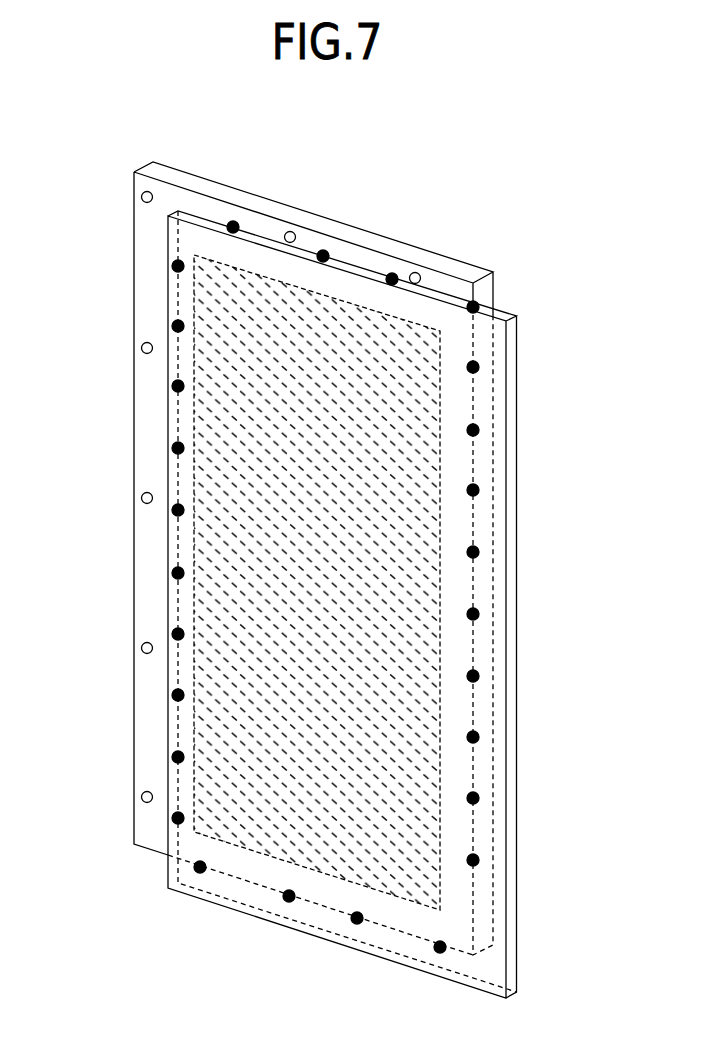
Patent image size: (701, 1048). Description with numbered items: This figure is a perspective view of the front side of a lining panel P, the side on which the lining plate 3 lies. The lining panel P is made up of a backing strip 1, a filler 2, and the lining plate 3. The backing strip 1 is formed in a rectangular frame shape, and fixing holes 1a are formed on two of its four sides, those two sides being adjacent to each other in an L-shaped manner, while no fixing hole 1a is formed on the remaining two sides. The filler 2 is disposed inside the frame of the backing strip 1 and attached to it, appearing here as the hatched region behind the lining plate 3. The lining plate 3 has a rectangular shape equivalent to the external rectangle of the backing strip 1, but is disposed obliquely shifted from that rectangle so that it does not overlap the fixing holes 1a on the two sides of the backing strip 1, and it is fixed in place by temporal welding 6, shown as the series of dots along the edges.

The backing strip 1 is at (258, 192).
The fixing holes 1a is at (291, 232).
The filler 2 is at (168, 366).
The lining plate 3 is at (318, 942).
The temporal welding 6 is at (233, 221).
The lining panel P is at (476, 166).